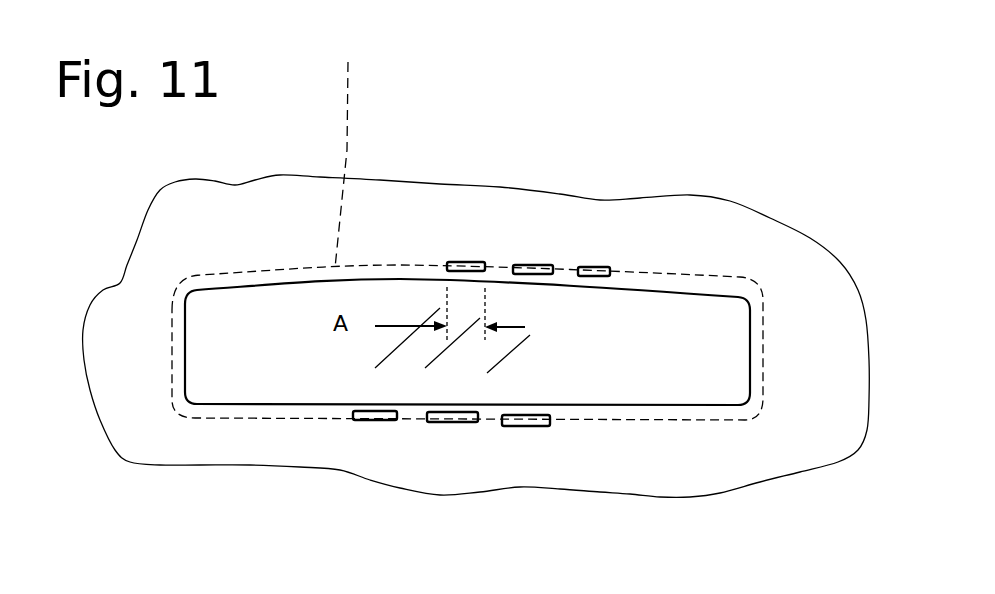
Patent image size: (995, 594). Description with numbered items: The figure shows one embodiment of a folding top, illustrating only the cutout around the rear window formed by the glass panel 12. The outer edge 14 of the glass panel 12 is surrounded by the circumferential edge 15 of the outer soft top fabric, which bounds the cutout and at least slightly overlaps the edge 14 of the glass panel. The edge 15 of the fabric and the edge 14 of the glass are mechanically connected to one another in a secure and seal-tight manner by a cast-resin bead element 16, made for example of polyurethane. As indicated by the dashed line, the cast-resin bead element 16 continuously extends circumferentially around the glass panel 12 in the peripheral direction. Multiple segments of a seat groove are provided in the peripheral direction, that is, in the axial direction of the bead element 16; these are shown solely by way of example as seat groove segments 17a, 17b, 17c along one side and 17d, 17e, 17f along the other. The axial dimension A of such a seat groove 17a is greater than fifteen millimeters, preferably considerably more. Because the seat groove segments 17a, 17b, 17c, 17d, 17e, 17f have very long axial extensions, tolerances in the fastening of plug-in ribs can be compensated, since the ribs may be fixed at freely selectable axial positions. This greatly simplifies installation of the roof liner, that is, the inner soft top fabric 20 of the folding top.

The glass panel 12 is at (567, 320).
The outer edge of the glass panel 14 is at (217, 292).
The circumferential edge of the outer soft top fabric 15 is at (168, 413).
The cast-resin bead element 16 is at (245, 527).
The seat groove segment 17a is at (462, 262).
The seat groove segment 17b is at (533, 265).
The seat groove segment 17c is at (594, 267).
The seat groove segment 17d is at (375, 420).
The seat groove segment 17e is at (457, 421).
The seat groove segment 17f is at (533, 430).
The inner soft top fabric 20 is at (390, 217).